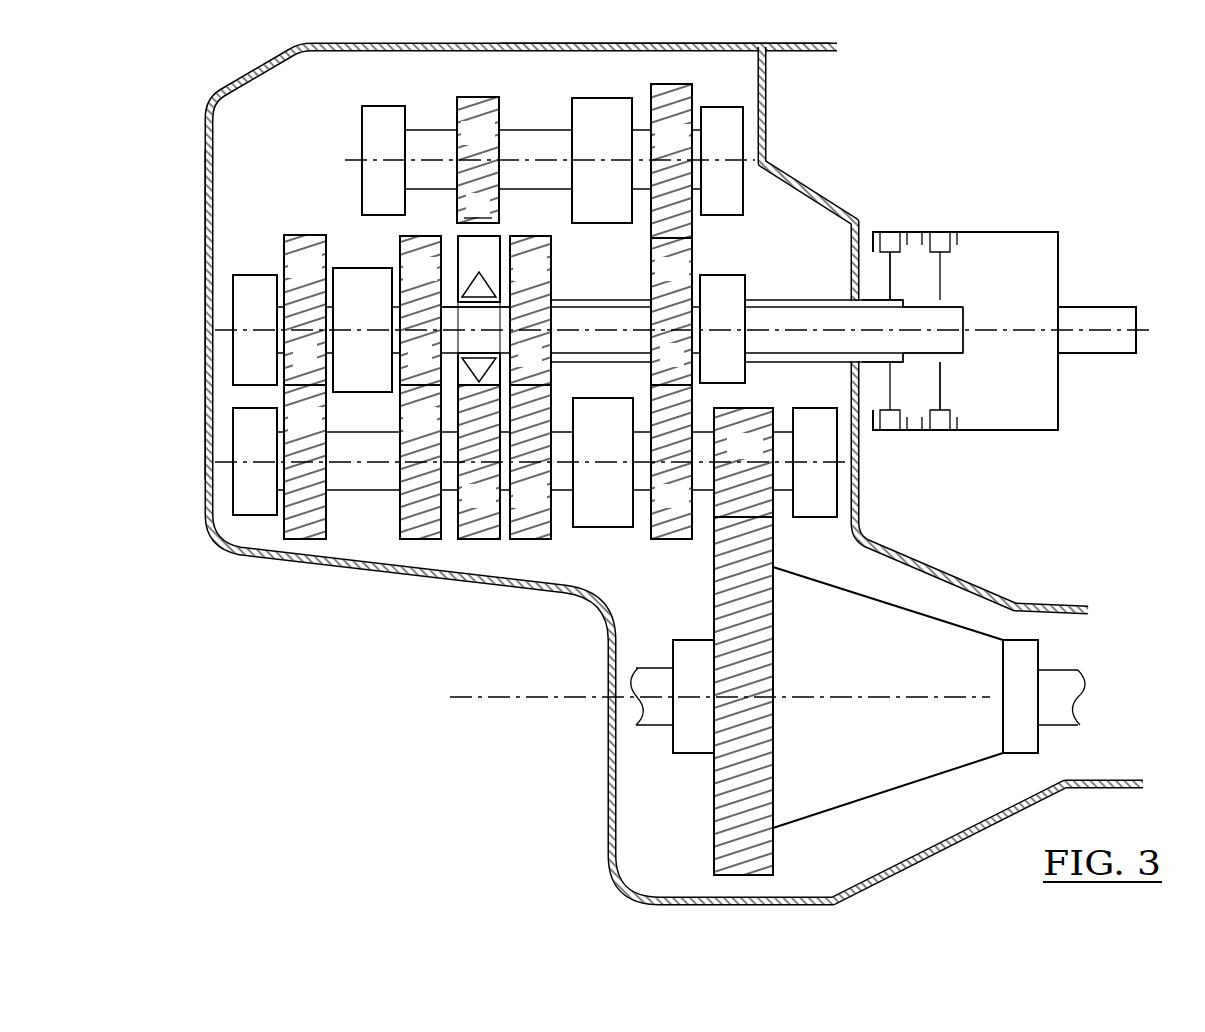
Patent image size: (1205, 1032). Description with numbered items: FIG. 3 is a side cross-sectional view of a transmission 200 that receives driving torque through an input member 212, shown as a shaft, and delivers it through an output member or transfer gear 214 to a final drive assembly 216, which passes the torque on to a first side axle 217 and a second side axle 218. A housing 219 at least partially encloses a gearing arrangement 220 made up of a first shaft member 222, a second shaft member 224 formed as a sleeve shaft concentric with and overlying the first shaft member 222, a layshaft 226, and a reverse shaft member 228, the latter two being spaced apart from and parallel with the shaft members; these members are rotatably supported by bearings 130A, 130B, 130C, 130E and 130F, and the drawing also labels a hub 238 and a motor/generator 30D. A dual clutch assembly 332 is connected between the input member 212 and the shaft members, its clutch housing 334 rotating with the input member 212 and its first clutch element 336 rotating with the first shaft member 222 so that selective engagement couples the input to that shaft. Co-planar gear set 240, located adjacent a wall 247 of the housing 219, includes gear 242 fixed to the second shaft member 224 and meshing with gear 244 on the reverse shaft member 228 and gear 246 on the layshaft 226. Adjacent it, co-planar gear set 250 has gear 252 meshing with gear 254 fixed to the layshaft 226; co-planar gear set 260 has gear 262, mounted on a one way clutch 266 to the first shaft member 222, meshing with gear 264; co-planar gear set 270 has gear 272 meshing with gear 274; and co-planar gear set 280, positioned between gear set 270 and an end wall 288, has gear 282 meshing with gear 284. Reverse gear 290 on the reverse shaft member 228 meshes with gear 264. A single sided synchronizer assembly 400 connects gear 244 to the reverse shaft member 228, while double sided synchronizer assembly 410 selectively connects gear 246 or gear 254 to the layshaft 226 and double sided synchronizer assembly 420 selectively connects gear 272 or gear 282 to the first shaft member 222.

The transmission 200 is at (866, 98).
The input member 212 is at (1097, 307).
The transfer gear 214 is at (728, 458).
The final drive assembly 216 is at (853, 666).
The first side axle 217 is at (650, 735).
The second side axle 218 is at (1078, 725).
The housing 219 is at (288, 90).
The gearing arrangement 220 is at (418, 102).
The first shaft member 222 is at (953, 307).
The second shaft member 224 is at (622, 364).
The layshaft 226 is at (345, 488).
The reverse shaft member 228 is at (516, 188).
The hub 238 is at (890, 262).
The co-planar gear set 240 is at (669, 545).
The gear 242 is at (655, 281).
The gear 244 is at (655, 148).
The gear 246 is at (655, 508).
The wall 247 is at (767, 108).
The co-planar gear set 250 is at (530, 545).
The gear 252 is at (513, 281).
The gear 254 is at (513, 508).
The co-planar gear set 260 is at (481, 545).
The gear 262 is at (462, 271).
The gear 264 is at (462, 508).
The one way clutch 266 is at (458, 280).
The co-planar gear set 270 is at (420, 545).
The gear 272 is at (403, 281).
The gear 274 is at (403, 431).
The co-planar gear set 280 is at (299, 226).
The gear 282 is at (288, 278).
The gear 284 is at (288, 431).
The end wall 288 is at (205, 229).
The reverse gear 290 is at (461, 145).
The dual clutch assembly 332 is at (1012, 212).
The clutch housing 334 is at (1003, 430).
The first clutch element 336 is at (940, 382).
The synchronizer assembly 400 is at (585, 141).
The synchronizer assembly 410 is at (585, 443).
The synchronizer assembly 420 is at (348, 378).
The bearing 130A is at (362, 177).
The bearing 130B is at (715, 107).
The bearing 130C is at (233, 297).
The motor/generator 30D is at (728, 275).
The bearing 130E is at (233, 441).
The bearing 130F is at (837, 475).